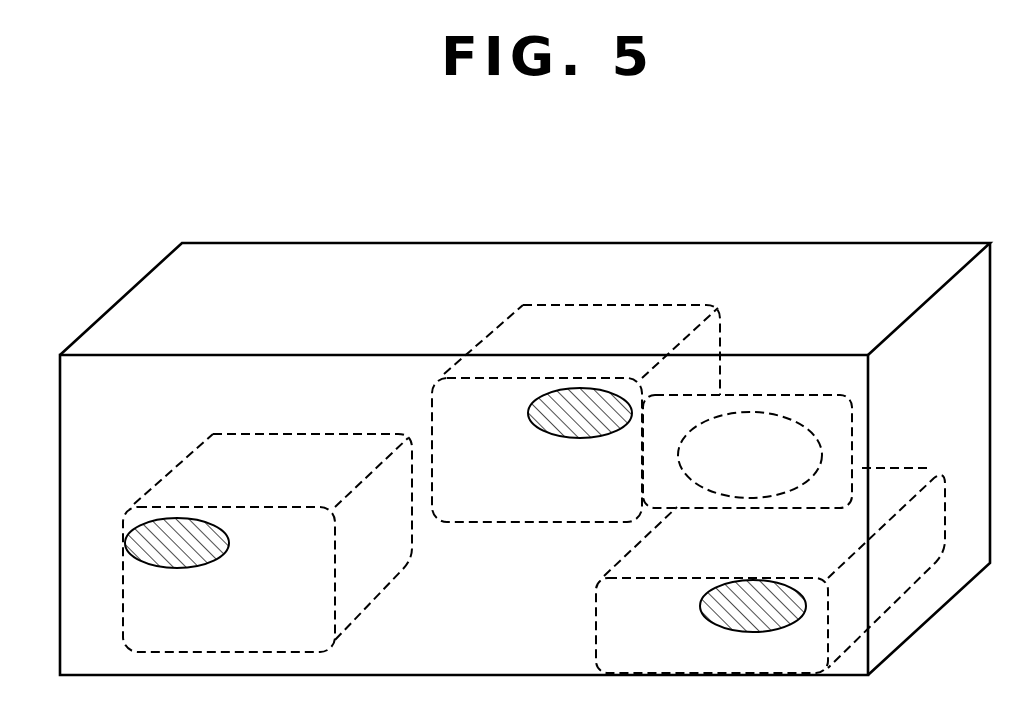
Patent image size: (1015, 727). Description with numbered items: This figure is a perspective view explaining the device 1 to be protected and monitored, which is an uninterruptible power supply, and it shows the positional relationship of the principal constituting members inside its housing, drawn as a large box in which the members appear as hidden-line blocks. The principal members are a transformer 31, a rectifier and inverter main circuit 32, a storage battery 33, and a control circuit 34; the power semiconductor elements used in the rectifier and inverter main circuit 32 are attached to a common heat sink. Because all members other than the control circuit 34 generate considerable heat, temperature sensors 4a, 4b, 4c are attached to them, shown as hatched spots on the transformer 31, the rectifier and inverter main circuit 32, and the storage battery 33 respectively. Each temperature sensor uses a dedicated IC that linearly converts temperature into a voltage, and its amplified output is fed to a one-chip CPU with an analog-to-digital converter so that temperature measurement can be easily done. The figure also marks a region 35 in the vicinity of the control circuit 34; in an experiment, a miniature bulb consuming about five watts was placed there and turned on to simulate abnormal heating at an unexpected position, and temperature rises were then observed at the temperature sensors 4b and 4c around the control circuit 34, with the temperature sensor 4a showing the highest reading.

The device 1 is at (138, 283).
The transformer 31 is at (360, 618).
The rectifier & inverter main circuit 32 is at (482, 523).
The storage battery 33 is at (593, 617).
The control circuit 34 is at (767, 393).
The region 35 is at (823, 453).
The temperature sensor 4a is at (178, 568).
The temperature sensor 4b is at (582, 442).
The temperature sensor 4c is at (715, 627).